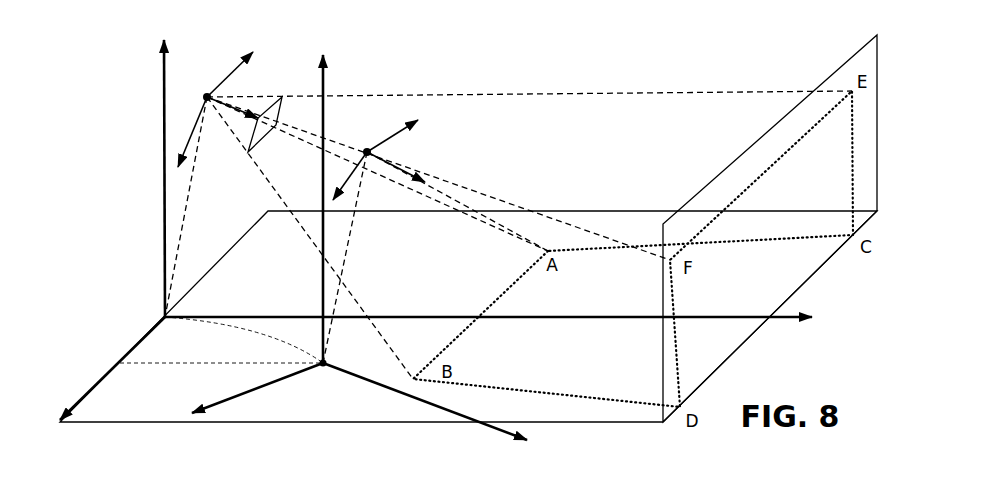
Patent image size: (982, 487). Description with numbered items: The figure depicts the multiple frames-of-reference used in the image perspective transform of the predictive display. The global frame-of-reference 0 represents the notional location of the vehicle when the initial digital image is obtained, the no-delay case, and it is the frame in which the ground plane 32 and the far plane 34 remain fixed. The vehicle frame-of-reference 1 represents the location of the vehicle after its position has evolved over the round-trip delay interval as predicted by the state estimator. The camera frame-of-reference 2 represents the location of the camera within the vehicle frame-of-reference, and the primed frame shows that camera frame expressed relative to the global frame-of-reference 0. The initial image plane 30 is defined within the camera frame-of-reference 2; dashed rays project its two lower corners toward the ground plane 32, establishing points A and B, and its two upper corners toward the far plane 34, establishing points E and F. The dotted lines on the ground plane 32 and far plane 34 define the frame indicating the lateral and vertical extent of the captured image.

The initial image plane 30 is at (277, 113).
The ground plane 32 is at (415, 423).
The far plane 34 is at (840, 67).
The global frame-of-reference 0 is at (451, 231).
The vehicle frame-of-reference 1 is at (334, 245).
The camera frame-of-reference 2 is at (295, 115).